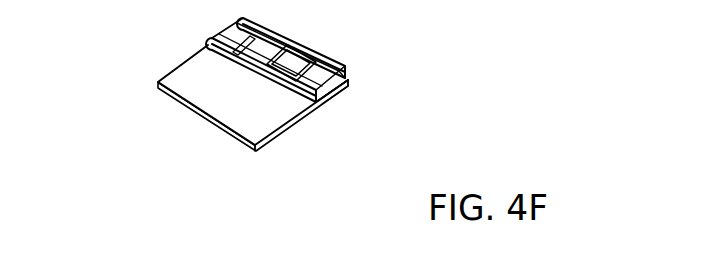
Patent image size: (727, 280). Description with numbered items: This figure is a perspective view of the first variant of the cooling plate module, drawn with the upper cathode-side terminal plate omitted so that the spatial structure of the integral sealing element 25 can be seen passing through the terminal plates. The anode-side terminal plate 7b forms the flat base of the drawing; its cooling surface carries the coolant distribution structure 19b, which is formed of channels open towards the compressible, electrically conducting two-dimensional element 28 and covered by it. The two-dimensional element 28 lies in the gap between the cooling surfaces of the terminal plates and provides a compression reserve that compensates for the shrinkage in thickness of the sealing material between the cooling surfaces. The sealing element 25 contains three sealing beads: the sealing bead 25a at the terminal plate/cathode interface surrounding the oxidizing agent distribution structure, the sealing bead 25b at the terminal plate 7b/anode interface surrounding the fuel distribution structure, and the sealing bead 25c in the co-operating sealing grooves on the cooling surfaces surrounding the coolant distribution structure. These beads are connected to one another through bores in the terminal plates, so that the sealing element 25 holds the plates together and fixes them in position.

The compressible, electrically conducting two-dimensional element 28 is at (193, 80).
The anode-side terminal plate 7b is at (160, 95).
The coolant distribution structure 19b is at (262, 148).
The sealing element 25 is at (307, 74).
The sealing bead 25a is at (323, 57).
The sealing bead 25b is at (345, 75).
The sealing bead 25c is at (338, 92).